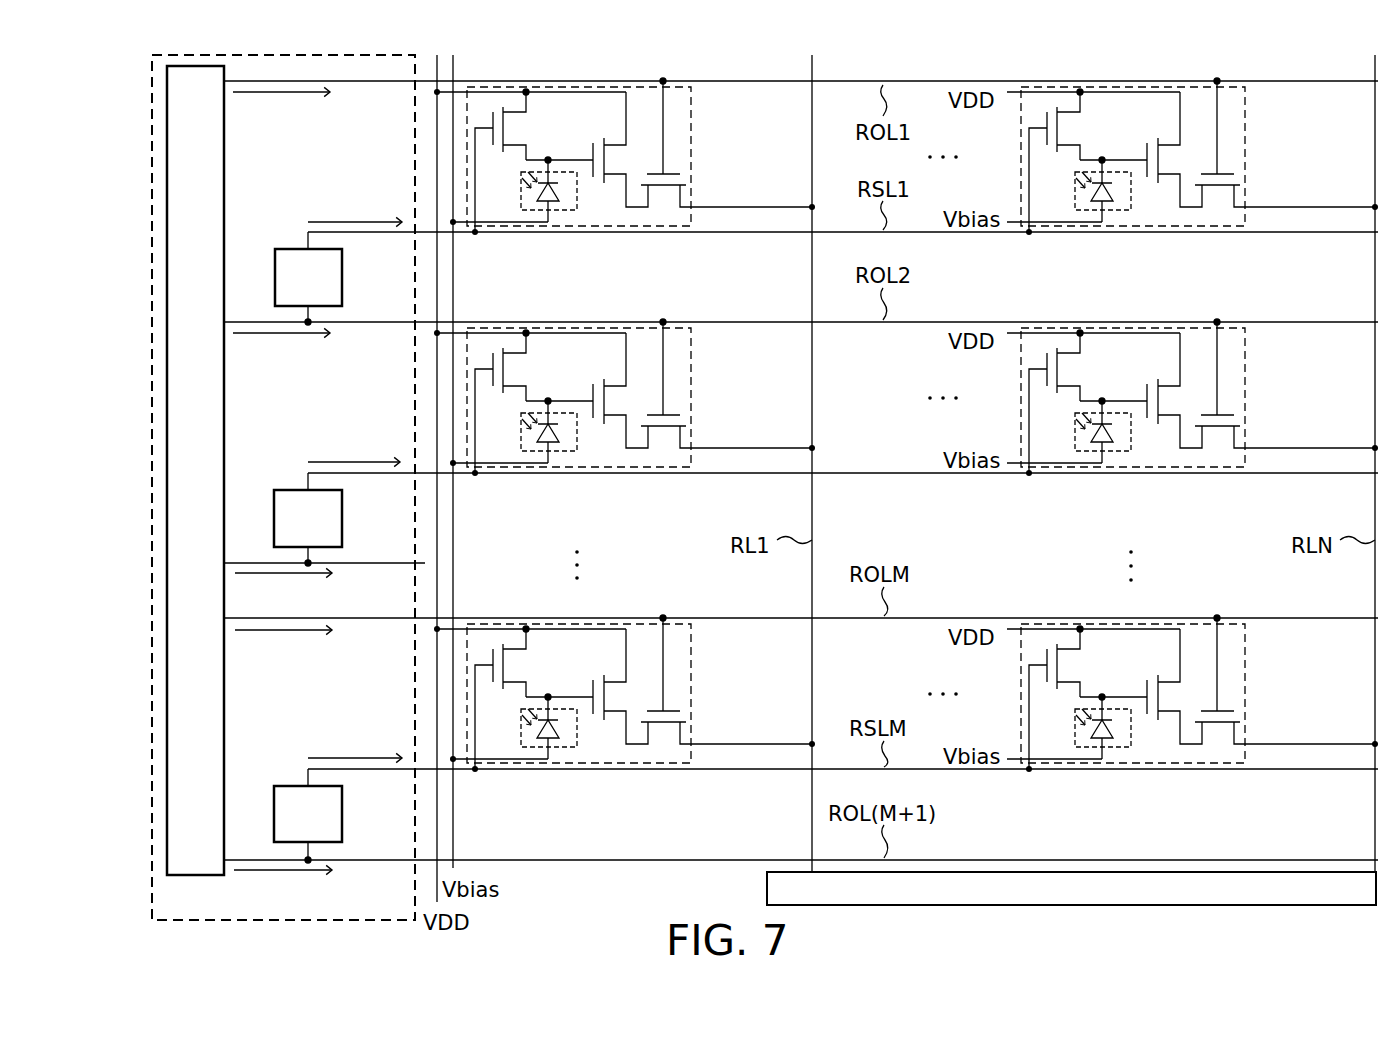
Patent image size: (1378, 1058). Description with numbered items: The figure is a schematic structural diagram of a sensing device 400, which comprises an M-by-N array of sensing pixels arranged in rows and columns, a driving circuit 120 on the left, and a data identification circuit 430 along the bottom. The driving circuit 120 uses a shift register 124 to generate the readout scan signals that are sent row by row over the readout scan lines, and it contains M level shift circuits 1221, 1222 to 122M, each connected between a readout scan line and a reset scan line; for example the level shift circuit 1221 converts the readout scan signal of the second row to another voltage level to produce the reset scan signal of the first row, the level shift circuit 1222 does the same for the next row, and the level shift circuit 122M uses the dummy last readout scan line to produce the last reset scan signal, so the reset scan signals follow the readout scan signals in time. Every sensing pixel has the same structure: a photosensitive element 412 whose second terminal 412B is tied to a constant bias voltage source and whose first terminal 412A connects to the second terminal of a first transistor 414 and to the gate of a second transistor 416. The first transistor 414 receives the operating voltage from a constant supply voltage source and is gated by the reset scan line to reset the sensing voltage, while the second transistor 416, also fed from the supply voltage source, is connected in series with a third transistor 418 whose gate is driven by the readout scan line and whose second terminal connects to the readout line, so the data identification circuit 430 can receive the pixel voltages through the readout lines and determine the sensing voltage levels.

The sensing device 400 is at (112, 84).
The driving circuit 120 is at (152, 275).
The shift register 124 is at (213, 482).
The level shift circuit 1221 is at (334, 289).
The level shift circuit 1222 is at (334, 530).
The level shift circuit 122M is at (336, 826).
The data identification circuit 430 is at (767, 885).
The photosensitive element 412 is at (521, 196).
The first terminal of the photosensitive element 412A is at (550, 175).
The second terminal of the photosensitive element 412B is at (547, 203).
The first transistor 414 is at (513, 113).
The second transistor 416 is at (617, 140).
The third transistor 418 is at (673, 197).